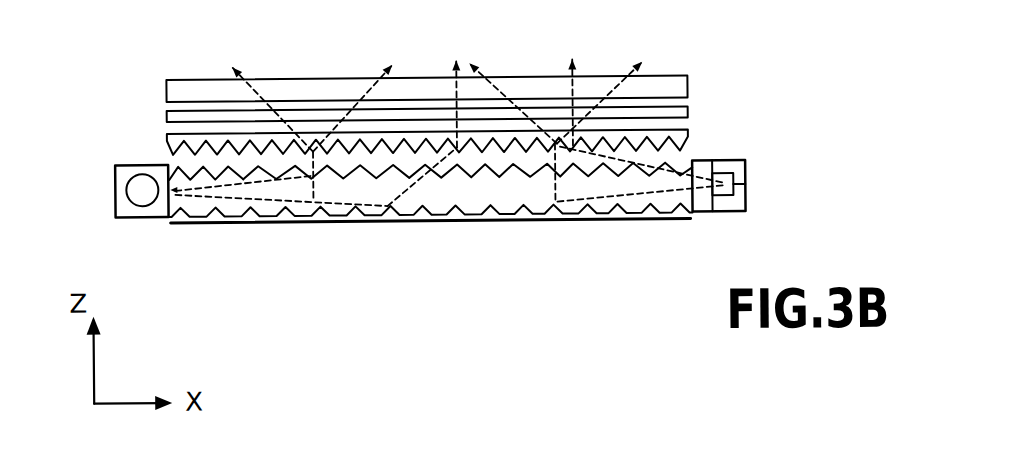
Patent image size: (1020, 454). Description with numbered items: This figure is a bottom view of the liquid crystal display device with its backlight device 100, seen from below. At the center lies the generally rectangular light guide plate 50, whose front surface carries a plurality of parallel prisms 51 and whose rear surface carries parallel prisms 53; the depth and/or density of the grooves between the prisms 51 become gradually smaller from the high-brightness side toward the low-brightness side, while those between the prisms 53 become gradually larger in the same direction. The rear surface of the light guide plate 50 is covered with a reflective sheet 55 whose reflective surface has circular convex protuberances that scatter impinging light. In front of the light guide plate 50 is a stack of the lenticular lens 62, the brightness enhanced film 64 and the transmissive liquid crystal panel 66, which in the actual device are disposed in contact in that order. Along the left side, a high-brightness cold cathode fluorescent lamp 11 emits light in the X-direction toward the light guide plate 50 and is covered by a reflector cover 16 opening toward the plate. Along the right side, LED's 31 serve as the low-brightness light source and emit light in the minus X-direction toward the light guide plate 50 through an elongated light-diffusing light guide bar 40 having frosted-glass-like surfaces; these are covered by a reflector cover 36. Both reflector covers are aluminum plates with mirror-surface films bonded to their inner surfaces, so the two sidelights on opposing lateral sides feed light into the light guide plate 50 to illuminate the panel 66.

The high-brightness cold cathode fluorescent lamp 11 is at (138, 183).
The reflector cover 16 is at (115, 200).
The LED's 31 is at (745, 195).
The reflector cover 36 is at (745, 183).
The light guide bar 40 is at (700, 205).
The light guide plate 50 is at (502, 193).
The prisms 51 is at (226, 184).
The prisms 53 is at (563, 202).
The reflective sheet 55 is at (645, 224).
The lenticular lens 62 is at (688, 137).
The brightness enhanced film 64 is at (688, 118).
The transmissive liquid crystal panel 66 is at (690, 82).
The backlight device 100 is at (347, 252).